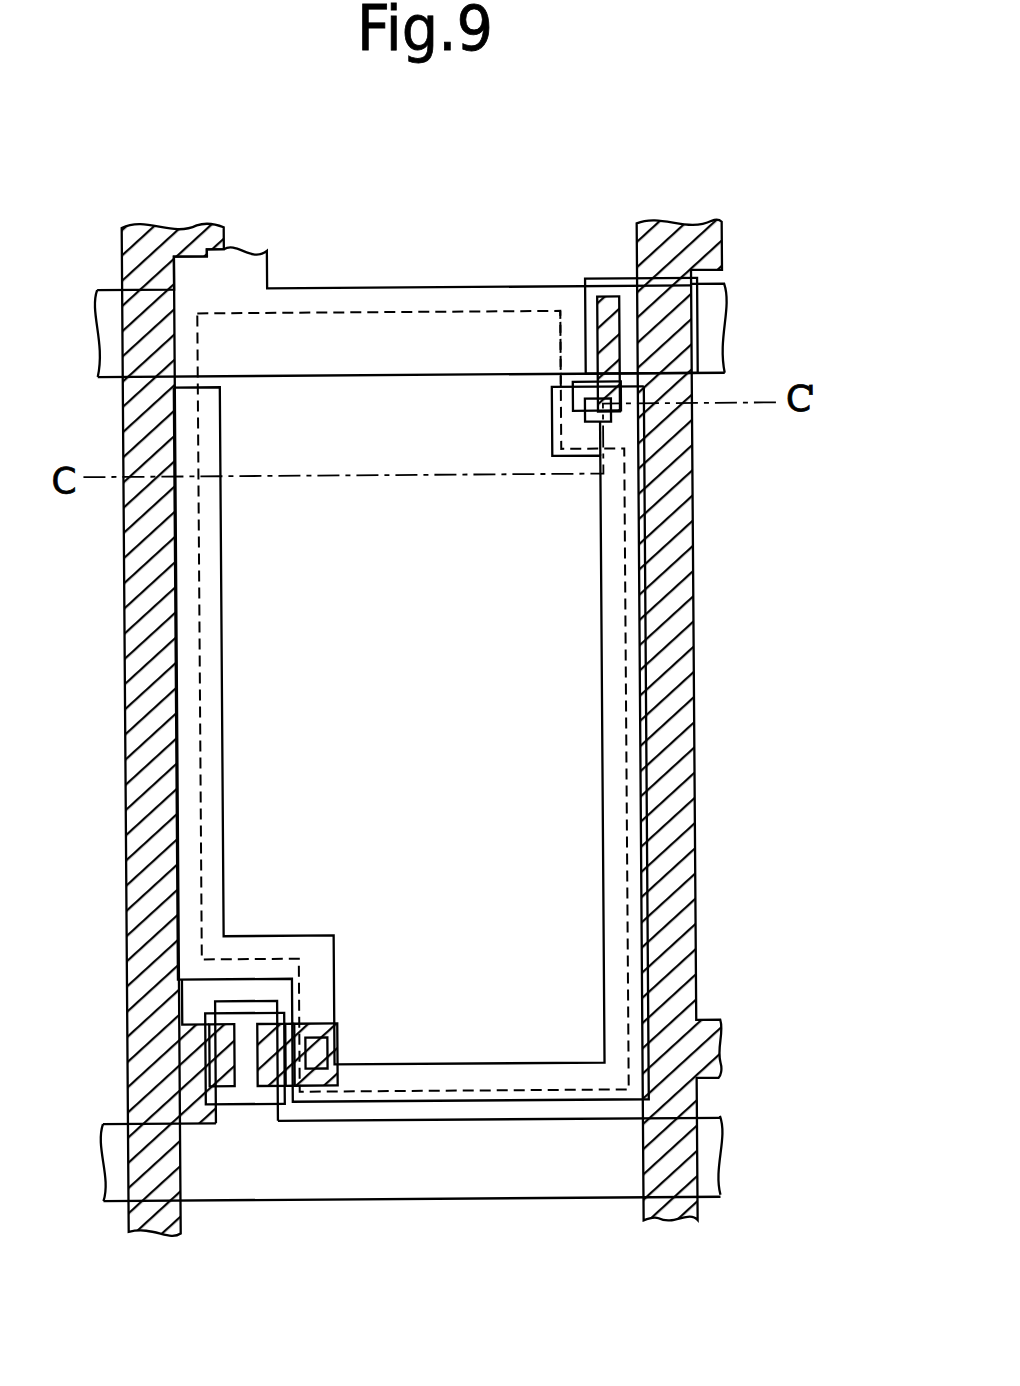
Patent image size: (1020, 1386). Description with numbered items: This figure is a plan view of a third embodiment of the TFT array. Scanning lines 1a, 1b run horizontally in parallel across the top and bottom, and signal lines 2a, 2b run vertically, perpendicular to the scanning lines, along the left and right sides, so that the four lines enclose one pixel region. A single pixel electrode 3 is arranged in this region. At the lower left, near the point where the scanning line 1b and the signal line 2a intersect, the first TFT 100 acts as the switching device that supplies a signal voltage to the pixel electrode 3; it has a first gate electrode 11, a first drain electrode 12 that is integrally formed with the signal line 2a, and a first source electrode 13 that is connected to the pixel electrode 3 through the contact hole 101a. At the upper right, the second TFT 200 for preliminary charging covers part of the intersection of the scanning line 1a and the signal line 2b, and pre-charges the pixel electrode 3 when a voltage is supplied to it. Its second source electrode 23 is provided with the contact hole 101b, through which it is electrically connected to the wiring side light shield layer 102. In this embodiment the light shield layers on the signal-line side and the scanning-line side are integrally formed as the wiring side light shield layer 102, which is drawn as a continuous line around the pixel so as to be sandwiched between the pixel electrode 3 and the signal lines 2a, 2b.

The scanning line 1a is at (264, 268).
The scanning line 1b is at (705, 1133).
The signal line 2a is at (126, 783).
The signal line 2b is at (696, 803).
The pixel electrode 3 is at (568, 972).
The first gate electrode 11 is at (237, 1000).
The first drain electrode 12 is at (208, 1070).
The first source electrode 13 is at (268, 1008).
The second source electrode 23 is at (605, 303).
The first TFT 100 is at (213, 1007).
The contact hole 101a is at (322, 1047).
The contact hole 101b is at (612, 422).
The wiring side light shield layer 102 is at (632, 560).
The second TFT 200 is at (628, 298).